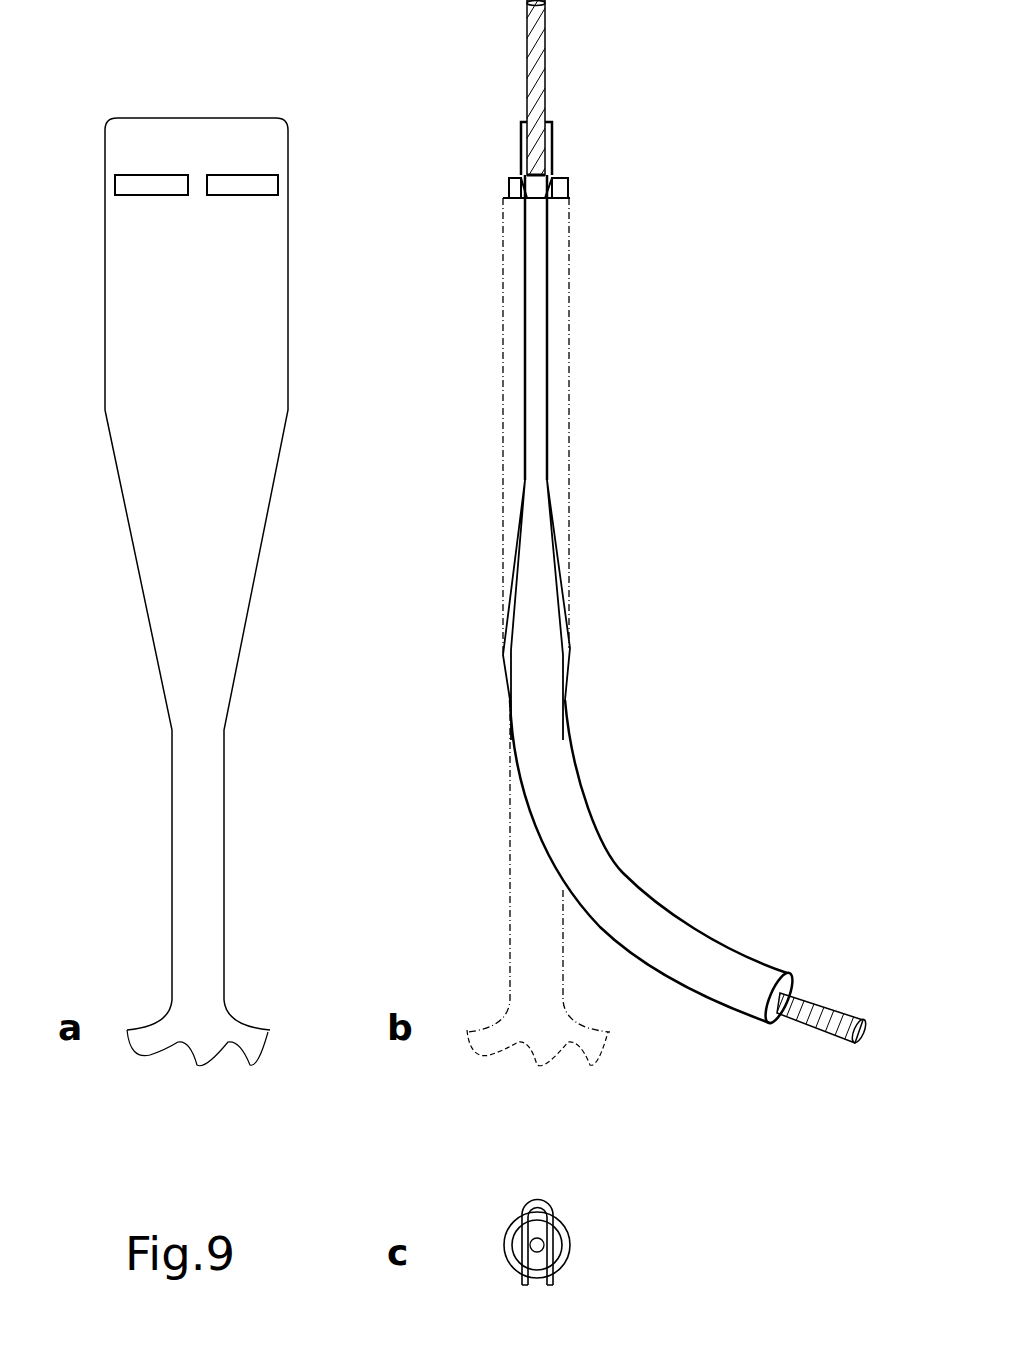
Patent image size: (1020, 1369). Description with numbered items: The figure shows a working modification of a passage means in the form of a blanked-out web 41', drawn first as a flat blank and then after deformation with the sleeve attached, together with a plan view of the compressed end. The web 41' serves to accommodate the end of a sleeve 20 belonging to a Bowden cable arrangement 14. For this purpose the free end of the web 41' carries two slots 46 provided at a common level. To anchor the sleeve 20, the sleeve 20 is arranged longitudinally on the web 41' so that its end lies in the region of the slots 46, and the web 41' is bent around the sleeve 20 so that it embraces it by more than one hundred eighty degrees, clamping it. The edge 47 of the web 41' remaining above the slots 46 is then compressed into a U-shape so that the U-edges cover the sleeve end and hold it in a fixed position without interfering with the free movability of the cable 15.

The Bowden cable arrangement 14 is at (610, 826).
The cable 15 is at (535, 83).
The sleeve 20 is at (536, 286).
The web 41' is at (196, 592).
The slots 46 is at (153, 185).
The edge 47 is at (172, 155).